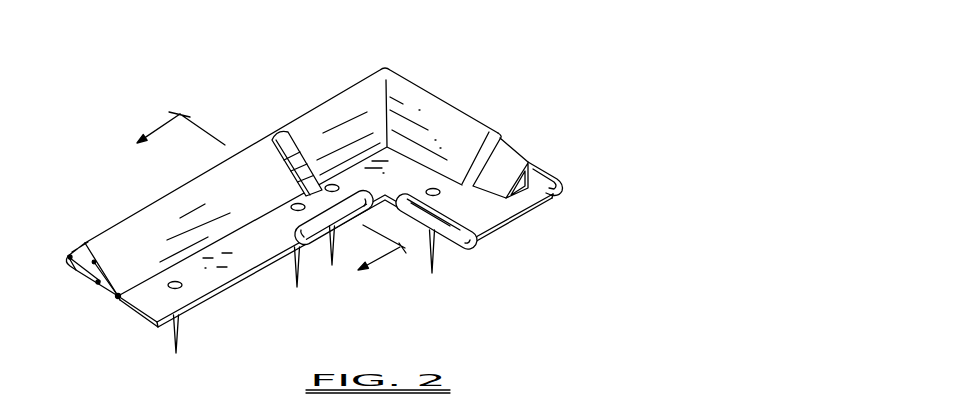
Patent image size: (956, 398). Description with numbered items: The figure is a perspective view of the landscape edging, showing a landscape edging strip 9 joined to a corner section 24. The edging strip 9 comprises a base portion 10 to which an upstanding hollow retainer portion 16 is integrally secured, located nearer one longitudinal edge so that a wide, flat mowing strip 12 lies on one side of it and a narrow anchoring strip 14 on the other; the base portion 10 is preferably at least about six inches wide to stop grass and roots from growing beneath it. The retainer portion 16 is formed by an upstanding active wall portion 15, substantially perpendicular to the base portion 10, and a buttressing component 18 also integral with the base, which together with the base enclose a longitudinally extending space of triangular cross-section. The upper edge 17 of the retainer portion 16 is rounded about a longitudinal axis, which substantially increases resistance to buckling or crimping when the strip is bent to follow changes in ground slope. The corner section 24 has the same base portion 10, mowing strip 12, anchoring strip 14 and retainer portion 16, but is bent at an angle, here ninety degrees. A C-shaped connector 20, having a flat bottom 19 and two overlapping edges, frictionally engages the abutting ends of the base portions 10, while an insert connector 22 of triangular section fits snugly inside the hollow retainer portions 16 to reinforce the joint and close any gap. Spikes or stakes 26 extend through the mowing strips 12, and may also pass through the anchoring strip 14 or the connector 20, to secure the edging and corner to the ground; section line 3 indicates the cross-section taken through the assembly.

The section line 3- 3 is at (259, 202).
The landscape edging strip 9 is at (487, 196).
The base portion 10 is at (499, 171).
The mowing strip 12 is at (247, 249).
The anchoring strip 14 is at (77, 271).
The active wall portion 15 is at (67, 260).
The retainer portion 16 is at (297, 152).
The upper edge 17 is at (187, 182).
The buttressing component 18 is at (313, 133).
The flat bottom 19 is at (414, 176).
The C-shaped connector 20 is at (402, 229).
The insert connector 22 is at (488, 179).
The corner section 24 is at (356, 66).
The spikes or stakes 26 is at (180, 332).